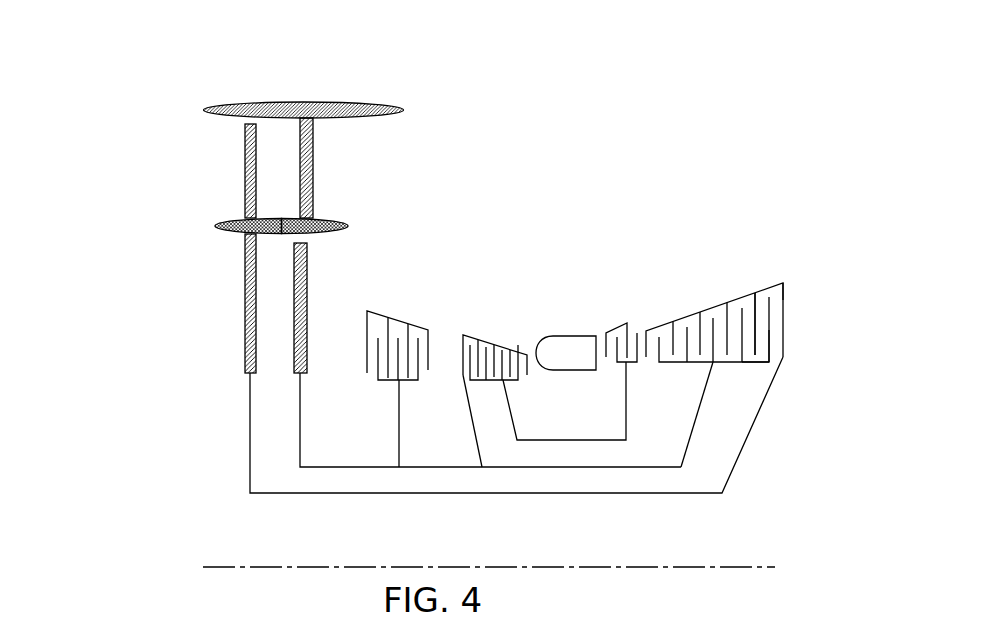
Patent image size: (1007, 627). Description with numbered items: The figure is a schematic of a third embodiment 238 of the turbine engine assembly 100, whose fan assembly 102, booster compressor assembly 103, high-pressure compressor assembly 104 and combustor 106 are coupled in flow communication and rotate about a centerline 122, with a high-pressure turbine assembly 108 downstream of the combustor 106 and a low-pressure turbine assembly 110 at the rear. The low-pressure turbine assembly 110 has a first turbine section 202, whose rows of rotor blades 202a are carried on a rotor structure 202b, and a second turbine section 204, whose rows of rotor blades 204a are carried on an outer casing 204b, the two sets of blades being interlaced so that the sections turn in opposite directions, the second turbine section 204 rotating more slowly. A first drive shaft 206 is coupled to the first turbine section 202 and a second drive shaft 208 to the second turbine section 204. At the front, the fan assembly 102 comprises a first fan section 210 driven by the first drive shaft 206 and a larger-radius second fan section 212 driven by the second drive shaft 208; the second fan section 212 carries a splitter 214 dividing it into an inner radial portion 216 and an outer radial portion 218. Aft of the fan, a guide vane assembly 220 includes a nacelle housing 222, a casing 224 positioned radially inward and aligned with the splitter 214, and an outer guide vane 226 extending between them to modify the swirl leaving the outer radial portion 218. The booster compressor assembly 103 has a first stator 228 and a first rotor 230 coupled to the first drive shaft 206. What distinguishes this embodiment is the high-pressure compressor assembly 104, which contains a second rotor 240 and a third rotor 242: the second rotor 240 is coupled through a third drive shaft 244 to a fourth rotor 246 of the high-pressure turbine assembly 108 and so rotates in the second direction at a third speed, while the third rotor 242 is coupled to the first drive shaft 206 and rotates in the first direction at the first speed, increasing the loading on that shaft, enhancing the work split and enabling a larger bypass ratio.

The turbine engine assembly 100 is at (174, 66).
The fan assembly 102 is at (149, 200).
The booster compressor assembly 103 is at (409, 304).
The high-pressure compressor assembly 104 is at (487, 327).
The combustor 106 is at (575, 336).
The high-pressure turbine assembly 108 is at (621, 313).
The low-pressure turbine assembly 110 is at (698, 270).
The centerline 122 is at (746, 562).
The first turbine section 202 is at (728, 363).
The rotor blades 202a is at (768, 342).
The rotor structure 202b is at (758, 363).
The second turbine section 204 is at (750, 297).
The rotor blades 204a is at (755, 310).
The outer casing 204b is at (775, 283).
The first drive shaft 206 is at (660, 465).
The second drive shaft 208 is at (642, 495).
The first fan section 210 is at (307, 280).
The second fan section 212 is at (209, 254).
The splitter 214 is at (222, 220).
The inner radial portion 216 is at (245, 333).
The outer radial portion 218 is at (245, 150).
The guide vane assembly 220 is at (374, 81).
The nacelle housing 222 is at (295, 100).
The casing 224 is at (330, 218).
The outer guide vane 226 is at (313, 150).
The first stator 228 is at (420, 322).
The first rotor 230 is at (413, 383).
The third embodiment 238 is at (633, 80).
The second rotor 240 is at (510, 385).
The third rotor 242 is at (510, 342).
The third drive shaft 244 is at (590, 438).
The fourth rotor 246 is at (636, 365).